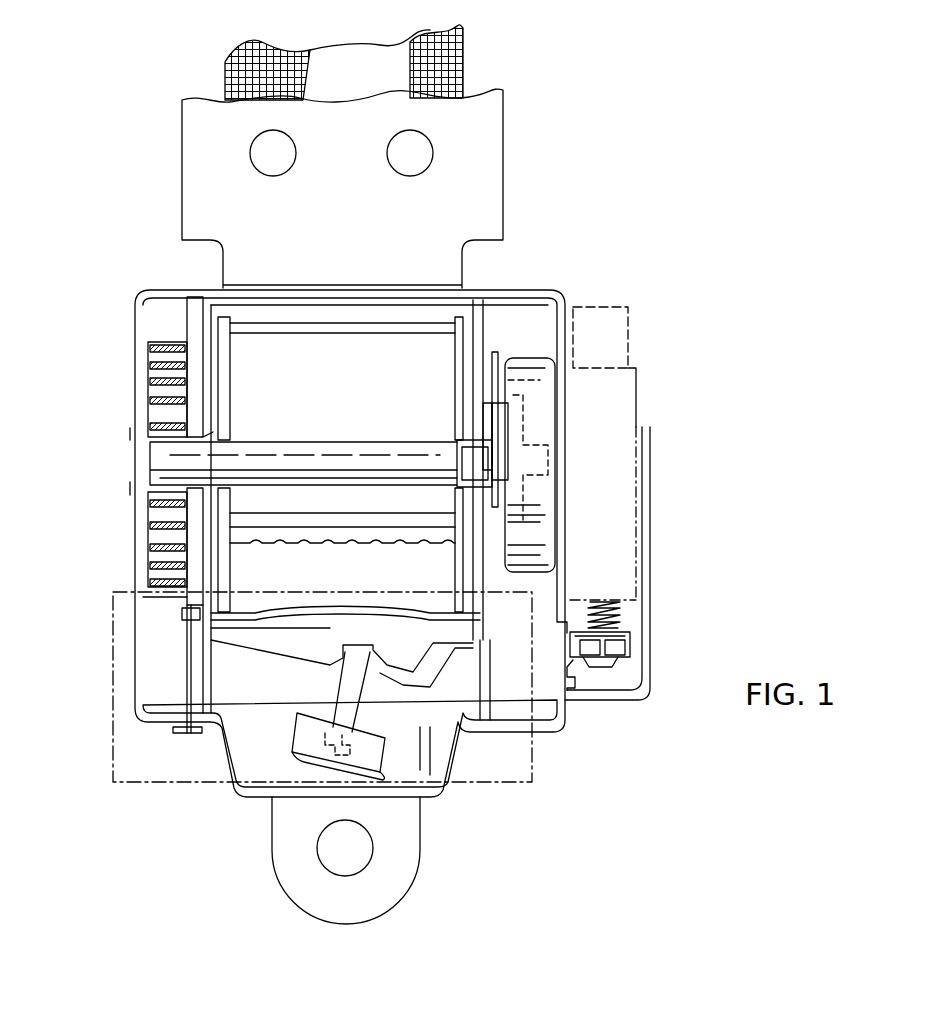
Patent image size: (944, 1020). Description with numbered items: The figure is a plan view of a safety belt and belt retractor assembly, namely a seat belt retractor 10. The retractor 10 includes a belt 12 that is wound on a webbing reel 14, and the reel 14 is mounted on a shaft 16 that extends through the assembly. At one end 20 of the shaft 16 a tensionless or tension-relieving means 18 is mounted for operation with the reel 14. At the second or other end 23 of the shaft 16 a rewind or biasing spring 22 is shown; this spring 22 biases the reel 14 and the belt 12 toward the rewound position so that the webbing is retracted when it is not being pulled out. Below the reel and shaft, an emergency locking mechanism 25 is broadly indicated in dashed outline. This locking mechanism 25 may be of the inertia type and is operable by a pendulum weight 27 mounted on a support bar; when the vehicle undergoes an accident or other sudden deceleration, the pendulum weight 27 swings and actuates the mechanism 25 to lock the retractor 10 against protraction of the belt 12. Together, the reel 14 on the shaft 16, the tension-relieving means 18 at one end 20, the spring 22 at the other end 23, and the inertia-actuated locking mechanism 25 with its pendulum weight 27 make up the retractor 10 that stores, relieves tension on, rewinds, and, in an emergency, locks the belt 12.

The seat belt retractor 10 is at (603, 213).
The belt 12 is at (463, 48).
The webbing reel 14 is at (223, 347).
The shaft 16 is at (180, 458).
The tension-relieving means 18 is at (530, 358).
The one end of shaft 20 is at (565, 450).
The spring 22 is at (167, 383).
The second end of shaft 23 is at (153, 490).
The emergency locking mechanism 25 is at (190, 784).
The pendulum weight 27 is at (372, 750).